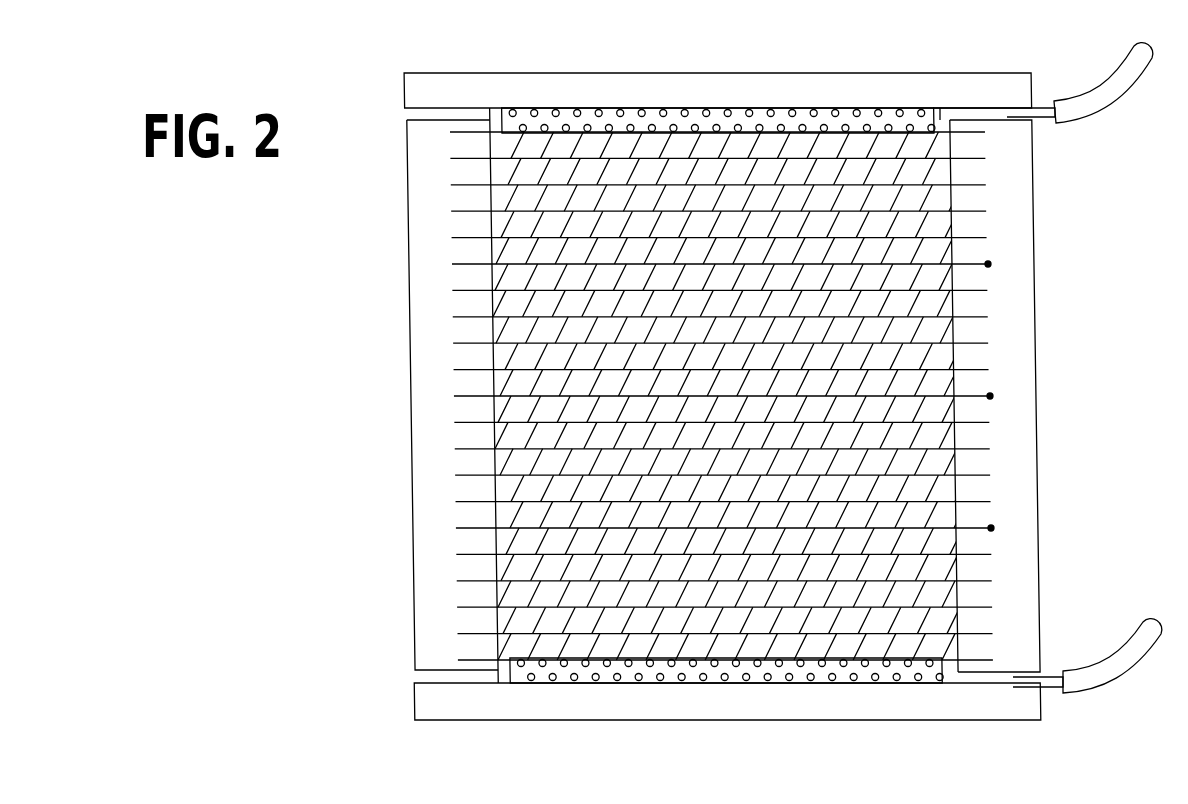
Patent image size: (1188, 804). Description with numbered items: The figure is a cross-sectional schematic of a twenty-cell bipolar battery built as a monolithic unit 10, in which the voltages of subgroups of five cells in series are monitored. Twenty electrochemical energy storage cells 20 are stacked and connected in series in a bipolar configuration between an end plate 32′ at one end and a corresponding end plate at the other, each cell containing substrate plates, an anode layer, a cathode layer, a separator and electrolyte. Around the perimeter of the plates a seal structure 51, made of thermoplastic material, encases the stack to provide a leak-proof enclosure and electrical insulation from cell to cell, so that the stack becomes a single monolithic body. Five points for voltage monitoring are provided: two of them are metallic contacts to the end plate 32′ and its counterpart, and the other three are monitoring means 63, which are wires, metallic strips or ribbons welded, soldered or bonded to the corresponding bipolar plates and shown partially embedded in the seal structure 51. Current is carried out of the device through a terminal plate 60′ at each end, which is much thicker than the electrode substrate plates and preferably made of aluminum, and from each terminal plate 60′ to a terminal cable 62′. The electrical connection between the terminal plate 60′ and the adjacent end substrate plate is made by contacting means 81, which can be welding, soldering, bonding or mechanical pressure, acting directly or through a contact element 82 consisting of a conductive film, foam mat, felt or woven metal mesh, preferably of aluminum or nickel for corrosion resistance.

The monolithic unit 10 is at (440, 148).
The electrochemical energy storage cell 20 is at (540, 142).
The end plate 32′ is at (600, 130).
The seal structure 51 is at (1018, 168).
The terminal plate 60′ is at (450, 86).
The terminal cable 62′ is at (1097, 98).
The monitoring means 63 is at (988, 264).
The contacting means 81 is at (987, 108).
The contact element 82 is at (655, 115).